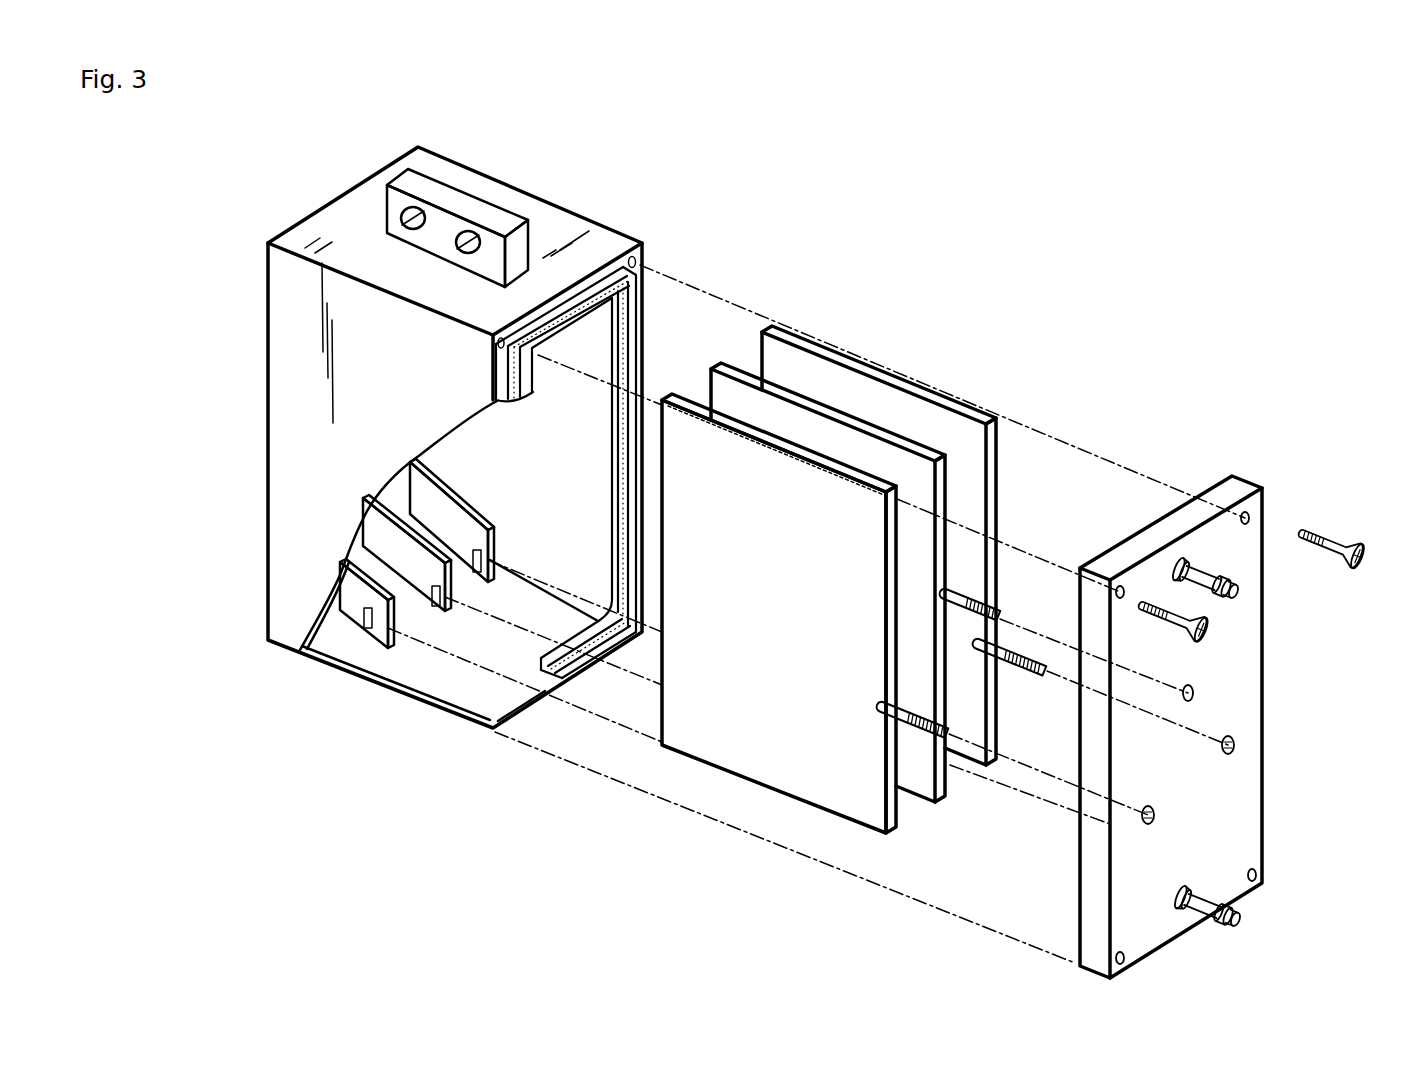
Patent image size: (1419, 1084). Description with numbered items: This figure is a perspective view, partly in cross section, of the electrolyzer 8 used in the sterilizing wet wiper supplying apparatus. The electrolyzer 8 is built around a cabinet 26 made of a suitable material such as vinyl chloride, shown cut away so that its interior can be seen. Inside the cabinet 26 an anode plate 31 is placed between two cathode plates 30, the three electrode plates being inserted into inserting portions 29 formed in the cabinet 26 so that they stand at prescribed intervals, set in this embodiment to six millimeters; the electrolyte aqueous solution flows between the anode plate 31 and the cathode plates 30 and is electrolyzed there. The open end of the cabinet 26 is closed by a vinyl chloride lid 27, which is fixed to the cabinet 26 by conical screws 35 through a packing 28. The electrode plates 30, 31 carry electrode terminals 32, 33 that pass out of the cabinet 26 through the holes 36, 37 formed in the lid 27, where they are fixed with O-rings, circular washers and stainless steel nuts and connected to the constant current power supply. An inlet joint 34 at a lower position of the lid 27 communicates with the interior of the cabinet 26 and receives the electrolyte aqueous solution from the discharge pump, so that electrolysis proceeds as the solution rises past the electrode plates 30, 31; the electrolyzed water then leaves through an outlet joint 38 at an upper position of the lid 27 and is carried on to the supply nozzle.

The electrolyzer 8 is at (937, 174).
The cabinet 26 is at (553, 222).
The lid 27 is at (1227, 490).
The packing 28 is at (633, 288).
The inserting portions 29 is at (430, 600).
The cathode plates 30 is at (877, 367).
The anode plate 31 is at (740, 378).
The electrode terminals 32 is at (1030, 673).
The electrode terminal 33 is at (987, 590).
The inlet joint 34 is at (1239, 916).
The conical screws 35 is at (1343, 550).
The holes 36 is at (1150, 806).
The hole 37 is at (1189, 703).
The outlet joint 38 is at (1240, 589).